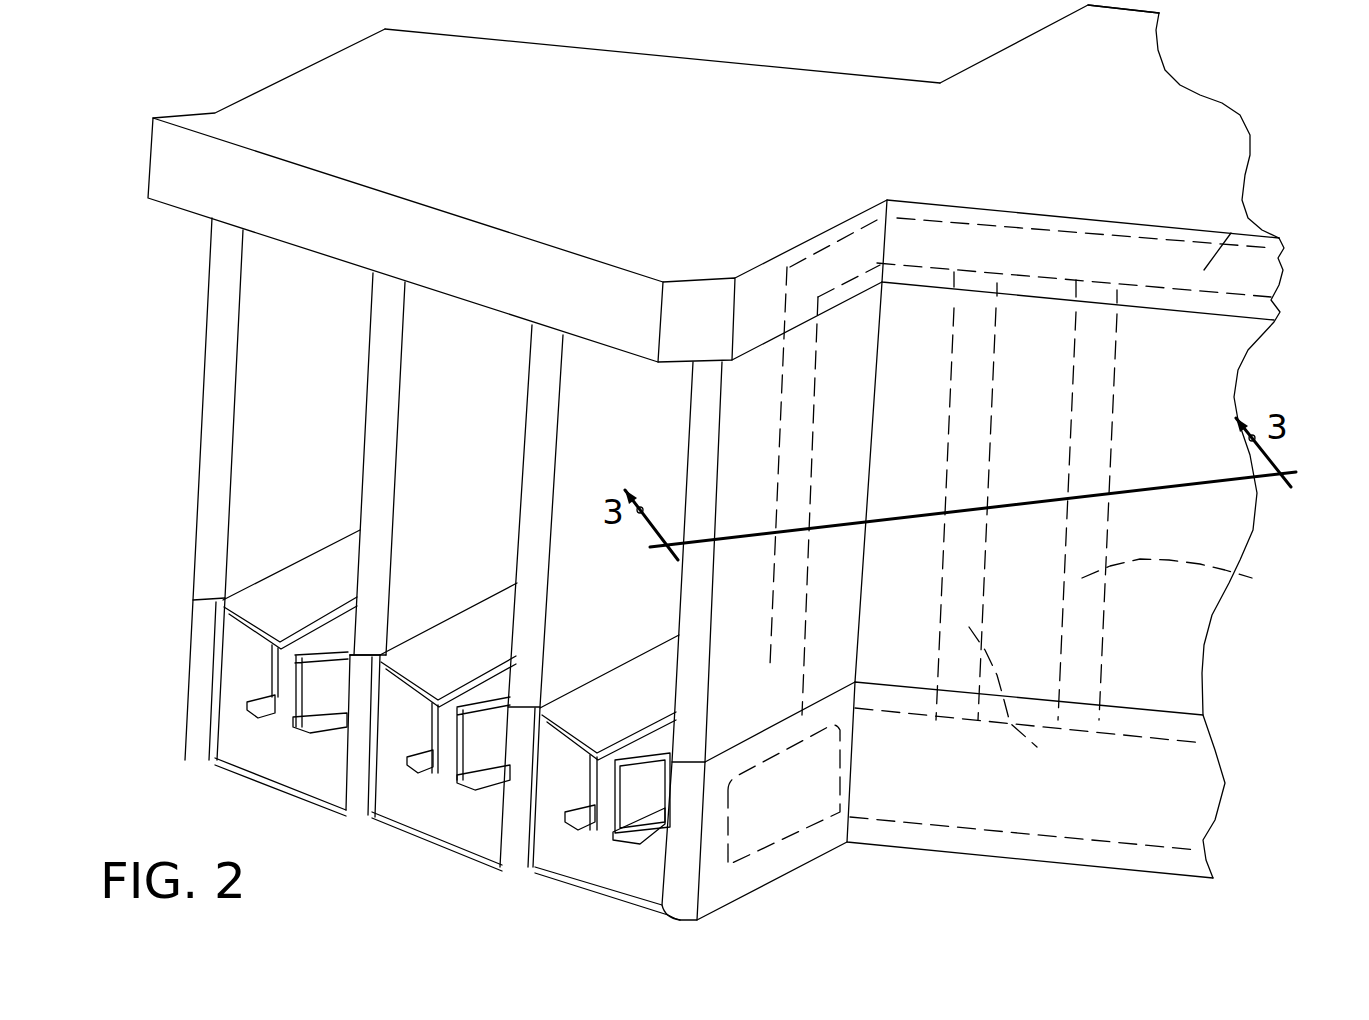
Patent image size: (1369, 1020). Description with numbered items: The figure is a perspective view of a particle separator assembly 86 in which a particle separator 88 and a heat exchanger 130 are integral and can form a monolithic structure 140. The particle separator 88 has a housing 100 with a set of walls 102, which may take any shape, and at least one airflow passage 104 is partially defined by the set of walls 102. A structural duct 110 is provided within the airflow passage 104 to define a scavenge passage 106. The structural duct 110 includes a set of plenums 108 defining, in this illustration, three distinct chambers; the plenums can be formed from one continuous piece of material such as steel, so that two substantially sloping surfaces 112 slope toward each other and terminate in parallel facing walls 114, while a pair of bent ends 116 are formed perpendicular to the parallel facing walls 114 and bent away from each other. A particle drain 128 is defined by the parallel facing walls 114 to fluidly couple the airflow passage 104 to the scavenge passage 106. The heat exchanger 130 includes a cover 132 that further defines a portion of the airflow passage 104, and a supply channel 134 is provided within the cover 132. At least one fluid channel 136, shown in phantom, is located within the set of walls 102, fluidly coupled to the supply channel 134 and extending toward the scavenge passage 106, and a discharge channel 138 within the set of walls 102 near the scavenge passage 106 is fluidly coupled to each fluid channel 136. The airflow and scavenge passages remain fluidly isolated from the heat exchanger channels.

The particle separator assembly 86 is at (1268, 70).
The particle separator 88 is at (202, 285).
The housing 100 is at (1234, 338).
The set of walls 102 is at (228, 254).
The airflow passage 104 is at (283, 343).
The scavenge passage 106 is at (400, 785).
The set of plenums 108 is at (640, 783).
The structural duct 110 is at (263, 755).
The sloping surfaces 112 is at (423, 653).
The parallel facing walls 114 is at (427, 737).
The bent ends 116 is at (420, 767).
The particle drain 128 is at (452, 705).
The heat exchanger 130 is at (1186, 157).
The cover 132 is at (727, 166).
The supply channel 134 is at (1246, 230).
The fluid channel 136 is at (1135, 662).
The discharge channel 138 is at (770, 830).
The monolithic structure 140 is at (718, 60).